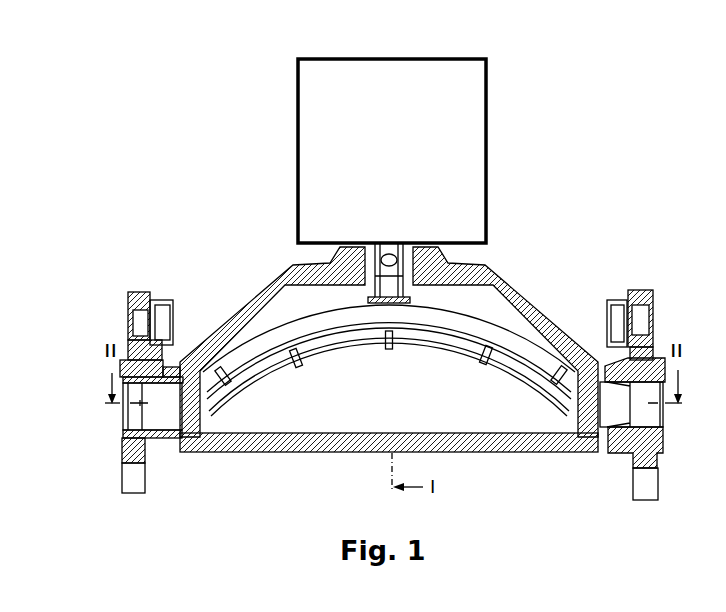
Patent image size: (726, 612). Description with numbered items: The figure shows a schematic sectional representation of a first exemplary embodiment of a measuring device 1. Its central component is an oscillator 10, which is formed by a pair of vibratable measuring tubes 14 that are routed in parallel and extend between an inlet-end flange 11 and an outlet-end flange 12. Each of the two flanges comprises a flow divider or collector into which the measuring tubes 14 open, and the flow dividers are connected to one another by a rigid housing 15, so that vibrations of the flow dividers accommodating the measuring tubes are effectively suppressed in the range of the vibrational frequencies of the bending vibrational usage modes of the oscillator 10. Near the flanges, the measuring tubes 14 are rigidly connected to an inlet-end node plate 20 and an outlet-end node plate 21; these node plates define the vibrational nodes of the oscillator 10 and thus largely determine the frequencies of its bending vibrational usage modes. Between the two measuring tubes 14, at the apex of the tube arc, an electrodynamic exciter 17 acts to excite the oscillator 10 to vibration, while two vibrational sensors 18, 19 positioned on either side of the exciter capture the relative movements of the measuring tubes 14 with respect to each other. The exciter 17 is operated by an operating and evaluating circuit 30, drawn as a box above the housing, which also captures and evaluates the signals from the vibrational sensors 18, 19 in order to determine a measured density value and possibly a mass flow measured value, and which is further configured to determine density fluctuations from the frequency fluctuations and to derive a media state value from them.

The measuring device 1 is at (218, 113).
The oscillator 10 is at (275, 333).
The inlet-end flange 11 is at (150, 302).
The outlet-end flange 12 is at (645, 290).
The measuring tubes 14 is at (452, 320).
The housing 15 is at (508, 293).
The electrodynamic exciter 17 is at (392, 347).
The vibrational sensor 18 is at (292, 368).
The vibrational sensor 19 is at (483, 357).
The inlet-end node plate 20 is at (214, 345).
The outlet-end node plate 21 is at (562, 350).
The operating and evaluating circuit 30 is at (472, 137).